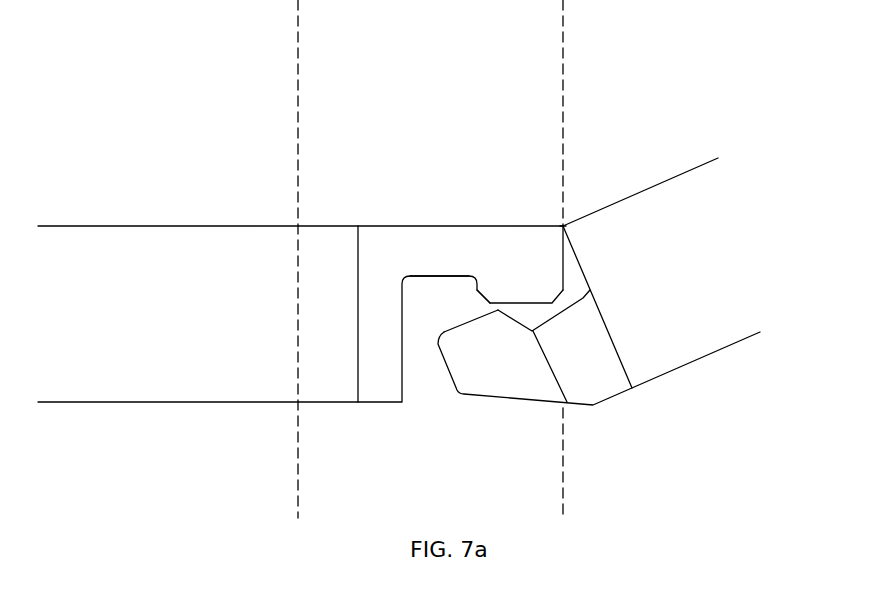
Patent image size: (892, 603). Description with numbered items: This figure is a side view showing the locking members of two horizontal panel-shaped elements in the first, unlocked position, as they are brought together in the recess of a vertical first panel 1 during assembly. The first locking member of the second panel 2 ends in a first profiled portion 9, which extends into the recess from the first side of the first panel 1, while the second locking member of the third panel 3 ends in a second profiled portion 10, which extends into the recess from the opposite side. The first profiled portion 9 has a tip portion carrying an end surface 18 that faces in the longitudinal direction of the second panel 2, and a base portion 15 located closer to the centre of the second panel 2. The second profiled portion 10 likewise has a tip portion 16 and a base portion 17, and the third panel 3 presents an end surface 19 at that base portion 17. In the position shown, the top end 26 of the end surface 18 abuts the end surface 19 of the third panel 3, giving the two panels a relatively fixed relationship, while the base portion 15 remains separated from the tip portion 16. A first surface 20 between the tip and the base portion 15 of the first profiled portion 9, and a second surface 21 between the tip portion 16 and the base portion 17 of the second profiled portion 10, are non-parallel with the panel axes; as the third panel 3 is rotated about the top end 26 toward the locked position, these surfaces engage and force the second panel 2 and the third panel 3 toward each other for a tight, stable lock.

The first panel 1 is at (298, 60).
The second panel 2 is at (135, 227).
The third panel 3 is at (656, 198).
The first profiled portion 9 is at (455, 230).
The second profiled portion 10 is at (607, 355).
The base portion 15 is at (440, 276).
The tip portion 16 is at (463, 328).
The base portion 17 is at (562, 315).
The end surface 18 is at (563, 240).
The end surface 19 is at (573, 255).
The first surface 20 is at (479, 291).
The second surface 21 is at (517, 323).
The top end 26 is at (562, 226).